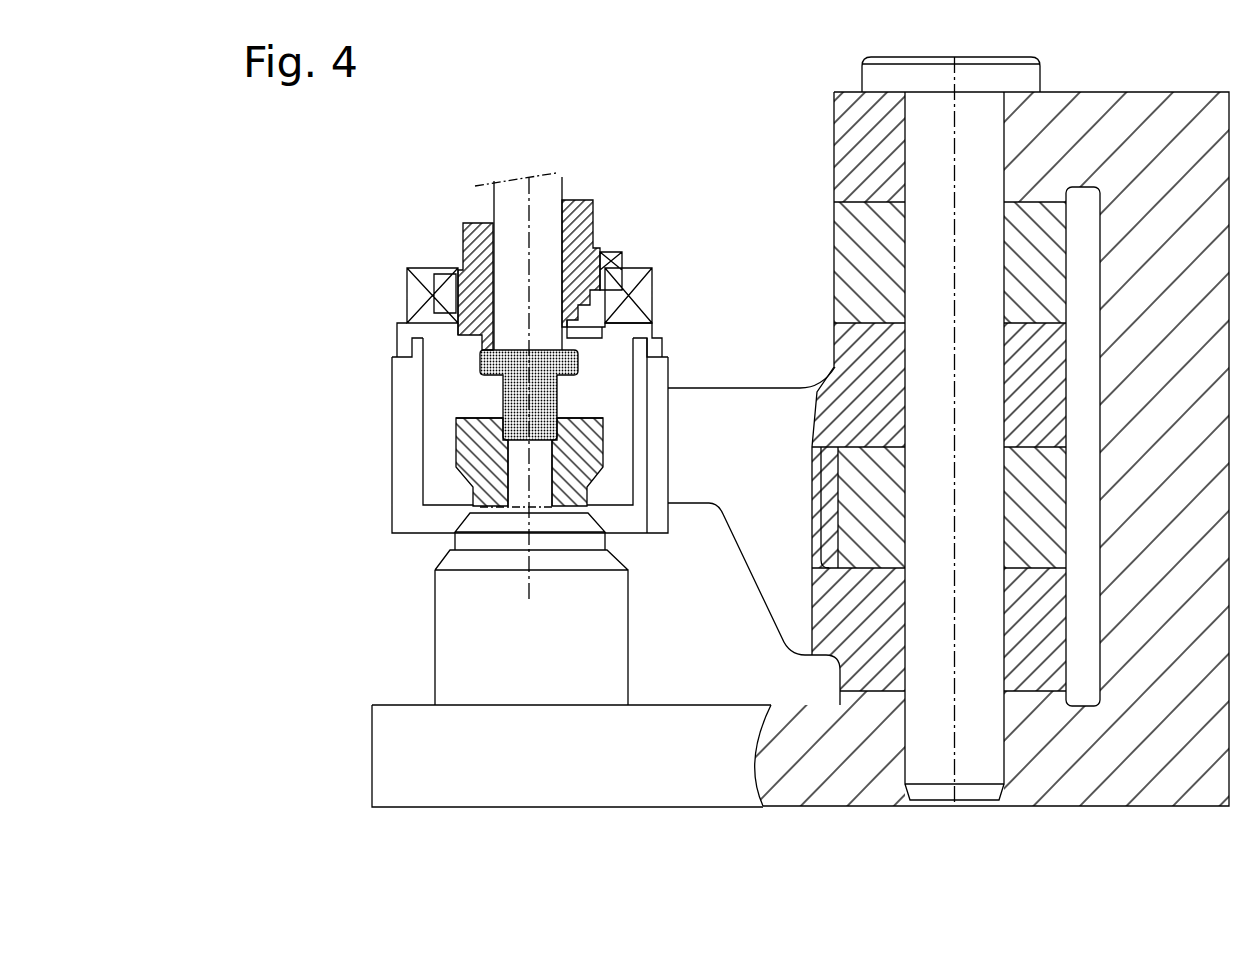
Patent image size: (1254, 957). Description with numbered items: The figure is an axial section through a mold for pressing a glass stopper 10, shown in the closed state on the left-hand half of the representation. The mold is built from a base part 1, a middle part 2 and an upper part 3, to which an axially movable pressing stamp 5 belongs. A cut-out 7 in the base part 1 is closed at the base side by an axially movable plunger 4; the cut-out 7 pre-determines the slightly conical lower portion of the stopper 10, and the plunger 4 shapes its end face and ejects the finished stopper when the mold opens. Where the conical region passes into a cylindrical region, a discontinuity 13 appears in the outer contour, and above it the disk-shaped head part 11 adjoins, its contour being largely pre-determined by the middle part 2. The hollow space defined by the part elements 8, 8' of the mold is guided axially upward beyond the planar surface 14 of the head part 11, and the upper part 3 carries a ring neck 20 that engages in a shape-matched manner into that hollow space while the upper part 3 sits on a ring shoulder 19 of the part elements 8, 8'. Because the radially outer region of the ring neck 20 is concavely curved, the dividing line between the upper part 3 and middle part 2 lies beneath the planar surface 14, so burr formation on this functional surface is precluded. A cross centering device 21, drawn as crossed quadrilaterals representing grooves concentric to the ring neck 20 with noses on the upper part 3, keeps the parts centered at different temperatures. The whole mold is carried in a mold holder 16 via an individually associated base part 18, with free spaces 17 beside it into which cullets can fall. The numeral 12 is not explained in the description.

The base part 1 is at (483, 453).
The middle part 2 is at (423, 390).
The upper part 3 is at (480, 318).
The plunger 4 is at (520, 493).
The pressing stamp 5 is at (542, 185).
The cut-out 7 is at (562, 425).
The part element of the mold 8 is at (698, 288).
The part element of the mold 8' is at (347, 349).
The glass stopper 10 is at (502, 395).
The head part 11 is at (479, 358).
The clamping element 12 is at (527, 353).
The discontinuity 13 is at (557, 393).
The planar surface 14 is at (562, 350).
The mold holder 16 is at (747, 428).
The free space 17 is at (397, 655).
The base part of the mold holder 18 is at (460, 610).
The ring shoulder 19 is at (587, 337).
The ring neck 20 is at (600, 290).
The cross centering device 21 is at (425, 290).